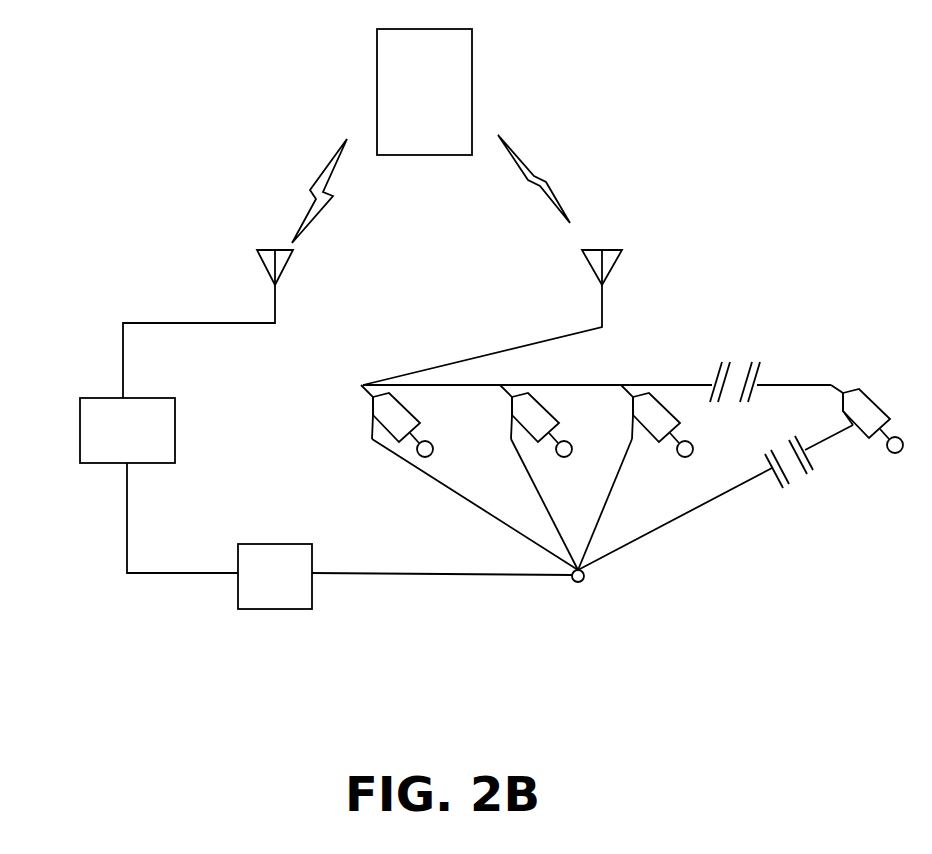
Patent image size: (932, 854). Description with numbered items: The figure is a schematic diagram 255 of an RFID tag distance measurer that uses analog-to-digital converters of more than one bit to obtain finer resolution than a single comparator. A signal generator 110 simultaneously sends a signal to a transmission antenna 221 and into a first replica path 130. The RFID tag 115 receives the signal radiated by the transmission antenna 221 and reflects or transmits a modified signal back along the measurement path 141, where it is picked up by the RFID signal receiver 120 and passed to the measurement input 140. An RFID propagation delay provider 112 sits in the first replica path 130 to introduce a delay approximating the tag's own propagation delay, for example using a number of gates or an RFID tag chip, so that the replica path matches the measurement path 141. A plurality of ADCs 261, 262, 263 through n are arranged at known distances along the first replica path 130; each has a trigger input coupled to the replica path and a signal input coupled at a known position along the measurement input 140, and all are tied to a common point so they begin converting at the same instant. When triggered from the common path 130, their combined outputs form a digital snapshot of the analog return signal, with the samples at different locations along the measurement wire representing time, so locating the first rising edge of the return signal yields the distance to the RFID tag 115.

The schematic diagram 255 is at (148, 90).
The RFID tag 115 is at (403, 134).
The measurement path 141 is at (530, 163).
The transmission antenna 221 is at (259, 256).
The RFID signal receiver 120 is at (617, 263).
The measurement input 140 is at (530, 343).
The signal generator 110 is at (80, 445).
The RFID propagation delay provider 112 is at (254, 589).
The first replica path 130 is at (433, 574).
The analog-to-digital converter 261 is at (373, 422).
The analog-to-digital converter 262 is at (512, 421).
The analog-to-digital converter 263 is at (633, 421).
The analog-to-digital converter n is at (843, 412).